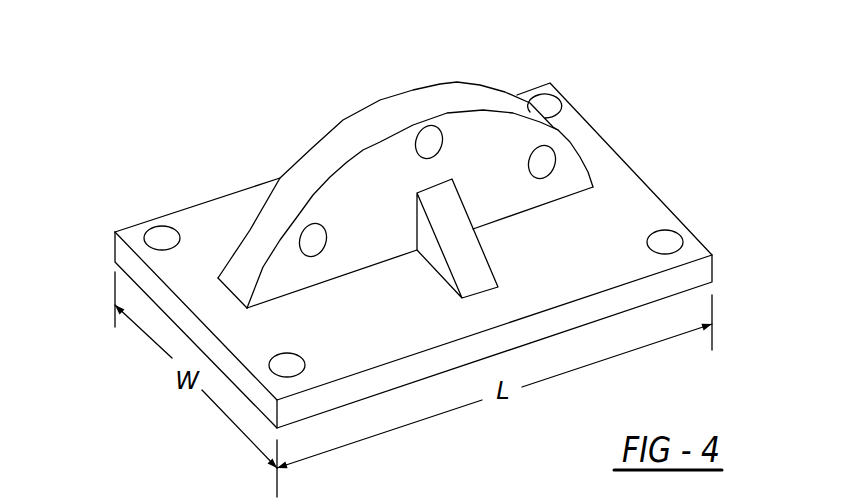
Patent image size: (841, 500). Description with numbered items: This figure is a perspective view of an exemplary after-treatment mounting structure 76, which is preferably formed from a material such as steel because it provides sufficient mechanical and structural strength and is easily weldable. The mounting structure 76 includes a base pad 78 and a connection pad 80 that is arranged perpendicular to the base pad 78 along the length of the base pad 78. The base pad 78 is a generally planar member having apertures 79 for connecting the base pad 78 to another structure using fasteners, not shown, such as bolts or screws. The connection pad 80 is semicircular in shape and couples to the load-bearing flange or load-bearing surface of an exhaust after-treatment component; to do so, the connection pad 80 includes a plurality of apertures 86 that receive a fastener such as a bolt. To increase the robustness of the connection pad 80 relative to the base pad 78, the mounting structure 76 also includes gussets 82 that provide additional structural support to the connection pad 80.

The mounting structure 76 is at (150, 110).
The base pad 78 is at (633, 208).
The apertures 79 is at (155, 226).
The connection pad 80 is at (412, 105).
The gussets 82 is at (470, 257).
The apertures 86 is at (552, 160).